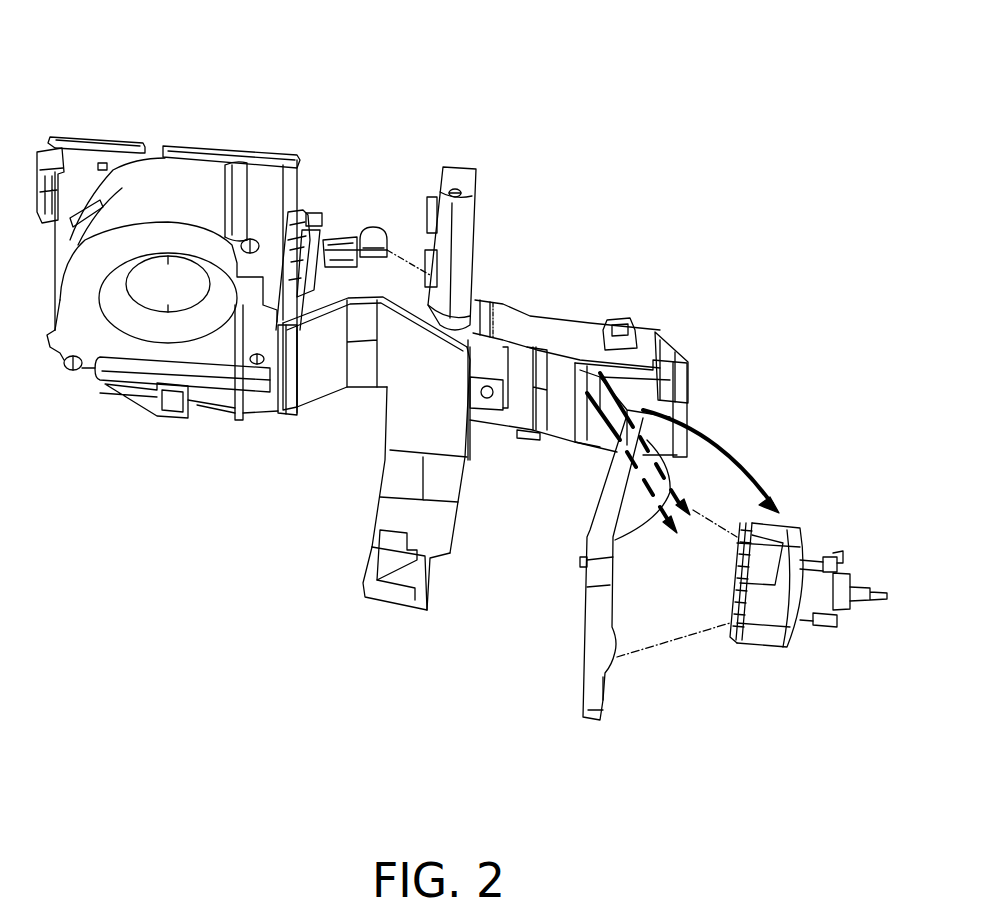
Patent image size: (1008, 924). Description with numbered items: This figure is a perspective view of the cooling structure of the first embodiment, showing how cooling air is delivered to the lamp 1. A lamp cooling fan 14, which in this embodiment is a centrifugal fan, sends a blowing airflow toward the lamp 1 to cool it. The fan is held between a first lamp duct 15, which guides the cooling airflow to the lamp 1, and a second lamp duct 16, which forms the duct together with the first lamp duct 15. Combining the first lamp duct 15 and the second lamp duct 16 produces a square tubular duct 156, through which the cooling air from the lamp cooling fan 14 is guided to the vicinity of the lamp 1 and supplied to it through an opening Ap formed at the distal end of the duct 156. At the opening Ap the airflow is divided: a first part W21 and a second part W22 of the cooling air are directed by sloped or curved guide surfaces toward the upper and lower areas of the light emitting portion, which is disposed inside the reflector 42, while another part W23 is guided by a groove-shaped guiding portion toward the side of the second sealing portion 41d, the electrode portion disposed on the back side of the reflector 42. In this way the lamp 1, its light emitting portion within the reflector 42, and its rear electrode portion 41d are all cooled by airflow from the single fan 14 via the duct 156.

The lamp 1 is at (665, 693).
The lamp cooling fan 14 is at (163, 318).
The first lamp duct 15 is at (410, 358).
The second lamp duct 16 is at (278, 180).
The duct 156 is at (521, 312).
The second sealing portion 41d is at (838, 568).
The reflector 42 is at (667, 607).
The opening Ap is at (585, 435).
The part of the cooling air W21 is at (617, 430).
The part of the cooling air W22 is at (645, 444).
The part of the cooling air W23 is at (711, 461).